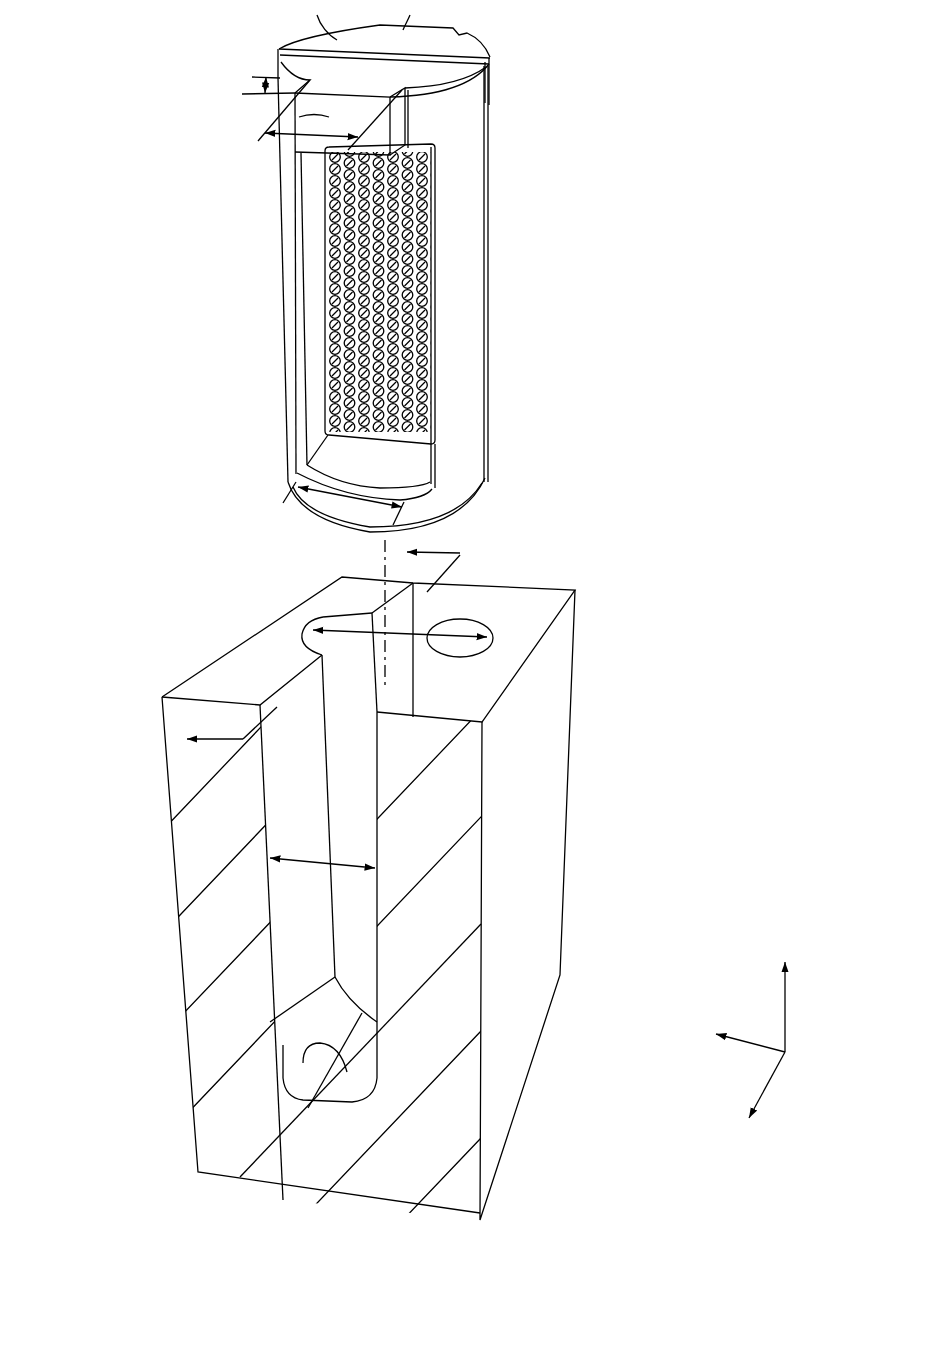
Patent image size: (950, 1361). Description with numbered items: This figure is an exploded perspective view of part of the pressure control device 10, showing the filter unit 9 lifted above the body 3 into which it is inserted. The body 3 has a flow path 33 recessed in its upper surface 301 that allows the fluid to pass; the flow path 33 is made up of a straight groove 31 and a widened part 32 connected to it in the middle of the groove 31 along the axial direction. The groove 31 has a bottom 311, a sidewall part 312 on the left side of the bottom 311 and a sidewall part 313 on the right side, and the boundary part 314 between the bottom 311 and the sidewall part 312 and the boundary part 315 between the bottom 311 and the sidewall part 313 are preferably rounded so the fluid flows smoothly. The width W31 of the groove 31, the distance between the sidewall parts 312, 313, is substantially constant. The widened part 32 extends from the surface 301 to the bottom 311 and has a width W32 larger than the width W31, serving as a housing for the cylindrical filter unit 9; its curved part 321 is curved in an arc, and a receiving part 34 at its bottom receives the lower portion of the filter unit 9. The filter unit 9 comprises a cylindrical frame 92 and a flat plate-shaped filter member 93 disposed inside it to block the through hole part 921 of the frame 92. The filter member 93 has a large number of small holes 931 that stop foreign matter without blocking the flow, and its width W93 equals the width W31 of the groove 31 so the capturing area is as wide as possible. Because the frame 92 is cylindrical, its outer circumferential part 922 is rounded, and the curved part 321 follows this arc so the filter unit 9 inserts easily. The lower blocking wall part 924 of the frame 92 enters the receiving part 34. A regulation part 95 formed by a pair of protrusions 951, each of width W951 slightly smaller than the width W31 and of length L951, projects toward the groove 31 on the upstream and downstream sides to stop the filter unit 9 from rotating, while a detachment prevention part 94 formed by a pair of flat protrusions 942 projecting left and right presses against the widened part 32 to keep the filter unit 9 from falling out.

The pressure control device 10 is at (604, 56).
The filter unit 9 is at (512, 62).
The detachment prevention part 94 is at (380, 68).
The flat protrusion 942 is at (277, 49).
The frame 92 is at (493, 218).
The through hole part 921 is at (318, 352).
The outer circumferential part 922 is at (465, 297).
The blocking wall part 924 is at (350, 512).
The regulation part 95 is at (281, 130).
The protrusion 951 is at (330, 114).
The length of slit L951 is at (245, 95).
The width of protrusion W951 is at (320, 137).
The filter member 93 is at (328, 302).
The small hole 931 is at (350, 223).
The width of filter member W93 is at (422, 474).
The body 3 is at (584, 619).
The upper surface 301 is at (540, 608).
The flow path 33 is at (158, 586).
The widened part 32 is at (301, 642).
The curved part 321 is at (370, 613).
The groove 31 is at (271, 692).
The bottom 311 is at (361, 993).
The sidewall part 312 is at (273, 907).
The sidewall part 313 is at (378, 903).
The boundary part 314 is at (198, 1172).
The boundary part 315 is at (362, 1092).
The receiving part 34 is at (284, 1040).
The width of widened part W32 is at (420, 634).
The width of groove W31 is at (307, 865).